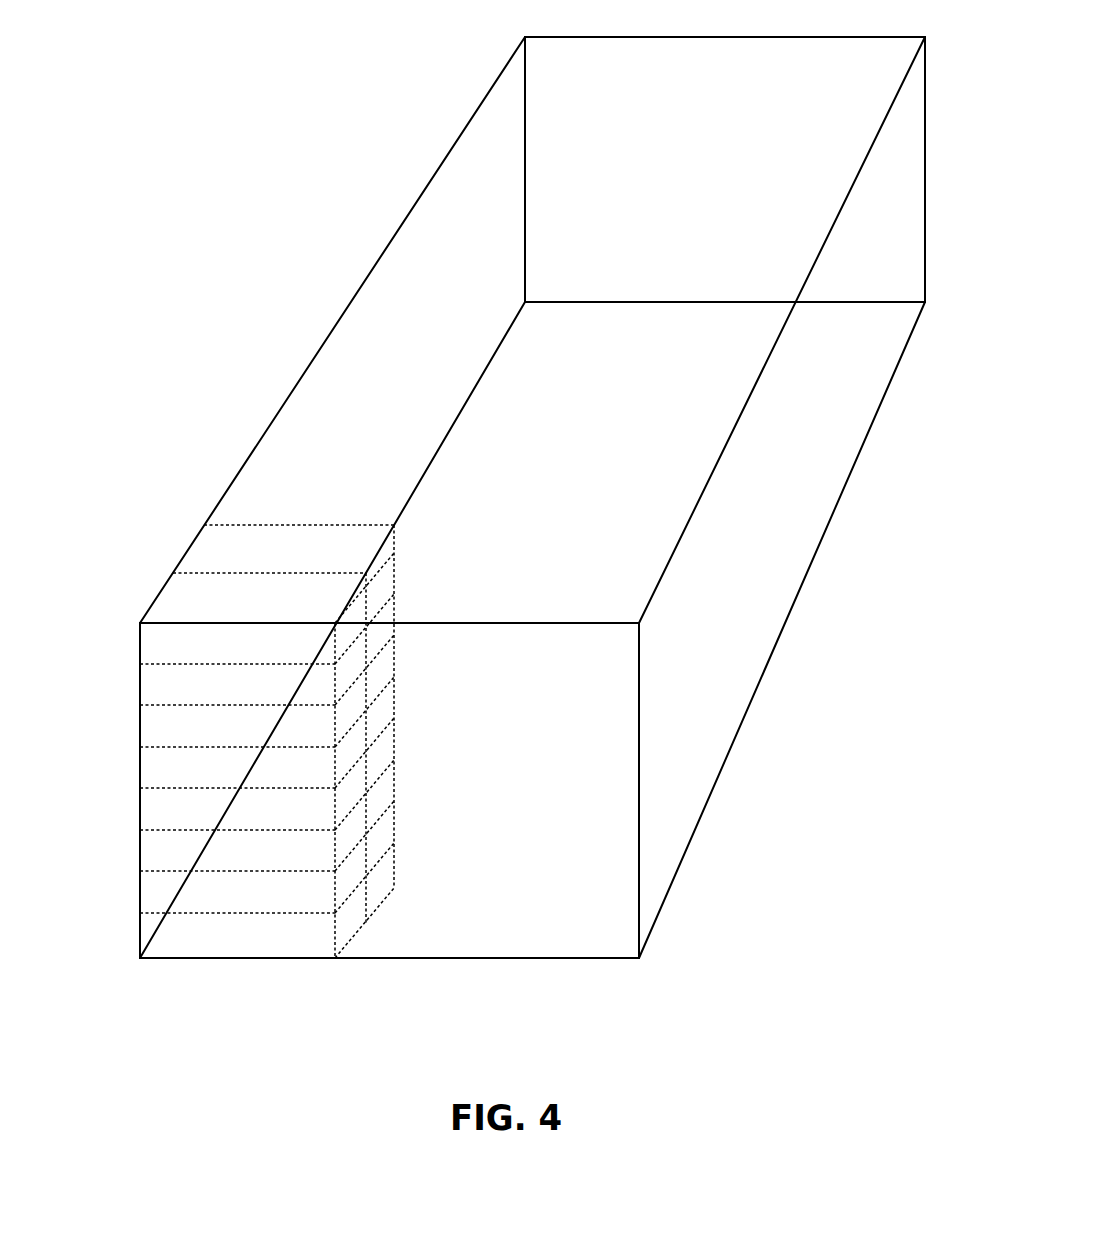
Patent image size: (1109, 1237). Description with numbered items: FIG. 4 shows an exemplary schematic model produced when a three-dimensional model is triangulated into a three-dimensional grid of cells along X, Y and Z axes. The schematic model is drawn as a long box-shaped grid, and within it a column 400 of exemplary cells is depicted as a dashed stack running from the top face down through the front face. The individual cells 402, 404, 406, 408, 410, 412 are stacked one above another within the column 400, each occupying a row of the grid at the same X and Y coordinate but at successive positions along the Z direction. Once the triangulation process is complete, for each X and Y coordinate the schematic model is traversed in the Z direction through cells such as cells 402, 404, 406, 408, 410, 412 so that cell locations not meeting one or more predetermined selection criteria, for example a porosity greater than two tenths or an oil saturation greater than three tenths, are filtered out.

The column 400 is at (226, 946).
The cell 402 is at (140, 686).
The cell 404 is at (140, 730).
The cell 406 is at (140, 770).
The cell 408 is at (140, 805).
The cell 410 is at (140, 850).
The cell 412 is at (140, 890).